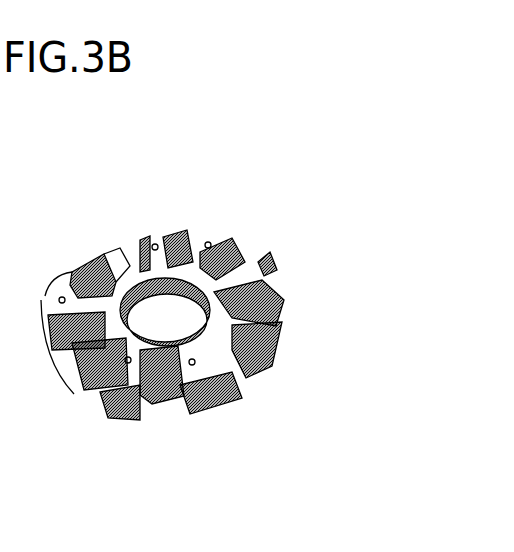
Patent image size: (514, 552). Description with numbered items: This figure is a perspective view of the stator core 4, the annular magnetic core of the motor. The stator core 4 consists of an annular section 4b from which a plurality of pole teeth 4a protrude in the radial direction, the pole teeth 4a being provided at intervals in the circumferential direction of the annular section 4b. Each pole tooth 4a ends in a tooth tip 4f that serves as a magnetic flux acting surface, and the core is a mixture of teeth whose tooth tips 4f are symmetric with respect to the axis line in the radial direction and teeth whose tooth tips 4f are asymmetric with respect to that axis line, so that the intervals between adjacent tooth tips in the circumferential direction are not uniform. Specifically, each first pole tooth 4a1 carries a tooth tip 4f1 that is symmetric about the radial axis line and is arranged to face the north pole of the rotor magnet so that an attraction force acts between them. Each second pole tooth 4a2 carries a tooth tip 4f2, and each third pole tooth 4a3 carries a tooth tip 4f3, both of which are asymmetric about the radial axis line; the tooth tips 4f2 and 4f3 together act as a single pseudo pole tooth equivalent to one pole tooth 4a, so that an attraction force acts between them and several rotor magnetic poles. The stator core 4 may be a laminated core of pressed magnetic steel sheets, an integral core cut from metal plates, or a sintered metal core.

The stator core 4 is at (63, 263).
The pole tooth 4a is at (56, 202).
The first pole tooth 4a1 is at (96, 264).
The second pole tooth 4a2 is at (155, 236).
The third pole tooth 4a3 is at (218, 243).
The annular section 4b is at (160, 343).
The tooth tip 4f is at (380, 267).
The tooth tip 4f1 is at (280, 272).
The tooth tip 4f2 is at (284, 336).
The tooth tip 4f3 is at (230, 396).